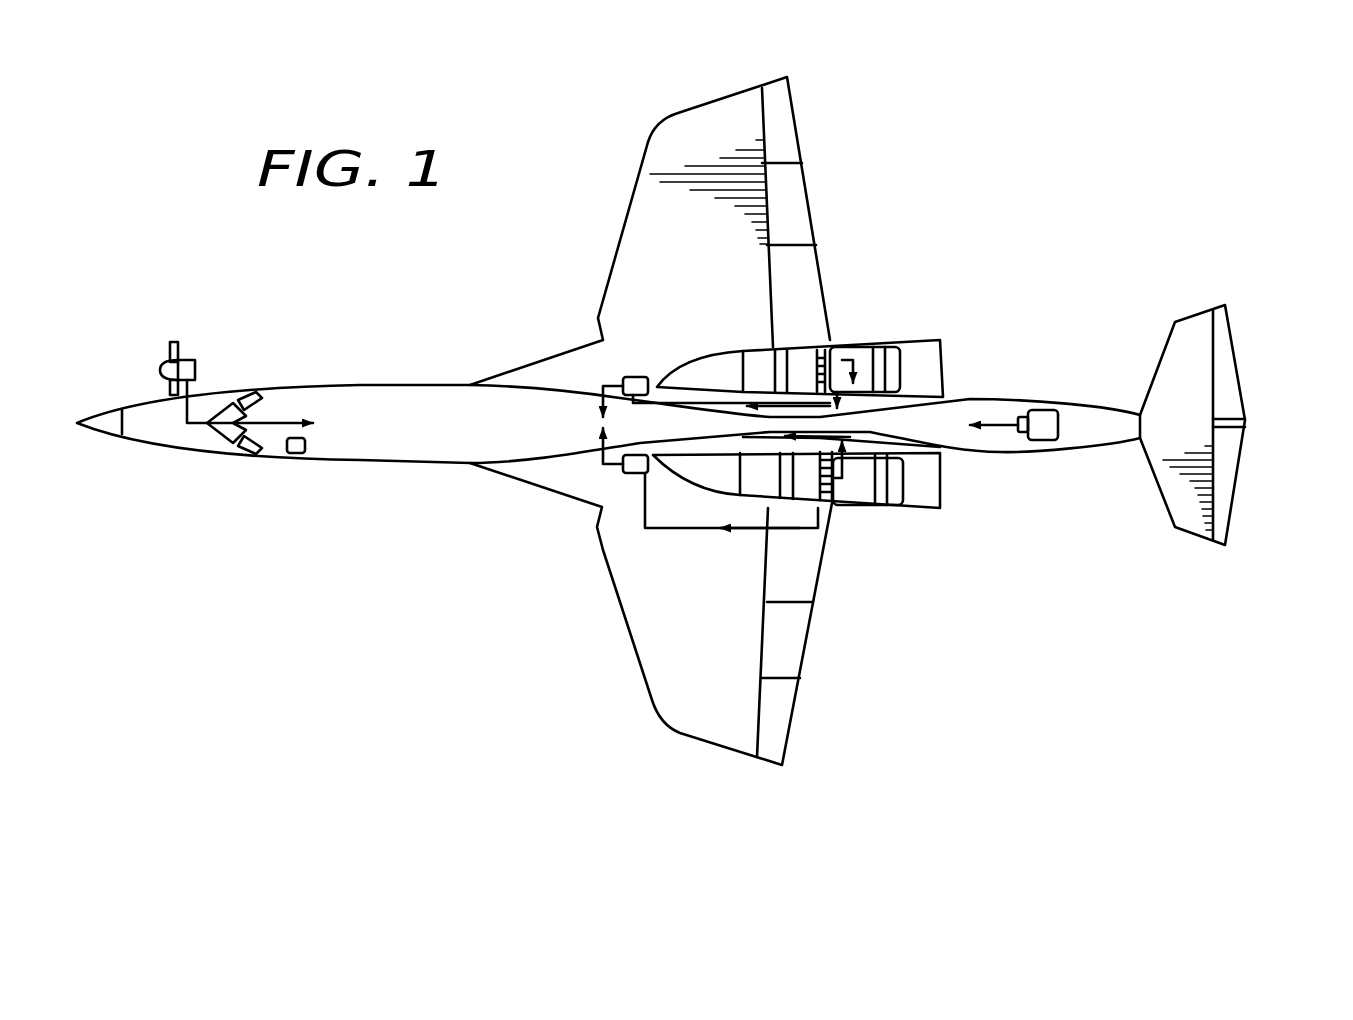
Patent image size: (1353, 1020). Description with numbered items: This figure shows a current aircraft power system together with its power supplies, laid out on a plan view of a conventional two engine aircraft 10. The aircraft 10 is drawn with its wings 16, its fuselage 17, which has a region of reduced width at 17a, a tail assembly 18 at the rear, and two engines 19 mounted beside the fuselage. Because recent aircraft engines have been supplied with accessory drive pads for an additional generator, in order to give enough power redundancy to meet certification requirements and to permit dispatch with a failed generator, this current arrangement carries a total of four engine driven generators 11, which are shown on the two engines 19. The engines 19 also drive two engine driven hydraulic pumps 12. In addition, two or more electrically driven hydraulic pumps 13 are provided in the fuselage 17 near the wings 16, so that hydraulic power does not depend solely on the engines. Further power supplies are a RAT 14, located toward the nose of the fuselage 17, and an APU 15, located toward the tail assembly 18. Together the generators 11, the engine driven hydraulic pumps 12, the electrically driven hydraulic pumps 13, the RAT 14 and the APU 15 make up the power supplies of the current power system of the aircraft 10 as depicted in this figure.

The aircraft 10 is at (540, 672).
The engine driven generators 11 is at (840, 503).
The engine driven hydraulic pumps 12 is at (830, 334).
The electrically driven hydraulic pumps 13 is at (617, 476).
The RAT 14 is at (197, 345).
The APU 15 is at (1057, 405).
The wings 16 is at (651, 421).
The fuselage 17 is at (375, 449).
The reduced width of fuselage 17a is at (737, 427).
The tail assembly 18 is at (1257, 330).
The engines 19 is at (895, 338).